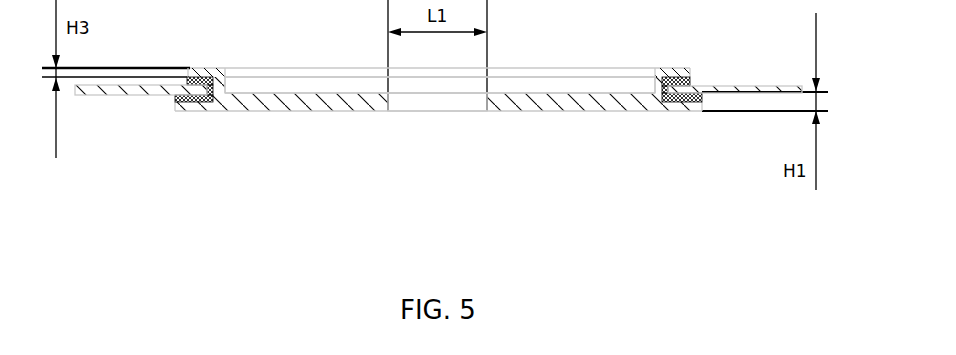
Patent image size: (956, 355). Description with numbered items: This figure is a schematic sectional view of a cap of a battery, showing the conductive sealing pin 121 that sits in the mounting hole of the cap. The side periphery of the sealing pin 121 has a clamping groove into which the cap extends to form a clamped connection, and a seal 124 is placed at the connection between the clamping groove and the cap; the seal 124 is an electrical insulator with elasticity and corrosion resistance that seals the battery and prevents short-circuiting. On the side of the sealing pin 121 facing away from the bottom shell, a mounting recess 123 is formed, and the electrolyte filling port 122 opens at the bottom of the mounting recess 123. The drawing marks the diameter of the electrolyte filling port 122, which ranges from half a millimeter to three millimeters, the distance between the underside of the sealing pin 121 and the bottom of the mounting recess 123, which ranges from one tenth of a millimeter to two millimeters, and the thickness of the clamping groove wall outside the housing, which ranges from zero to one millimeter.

The sealing pin 121 is at (325, 97).
The electrolyte filling port 122 is at (457, 97).
The mounting recess 123 is at (602, 80).
The seal 124 is at (210, 95).